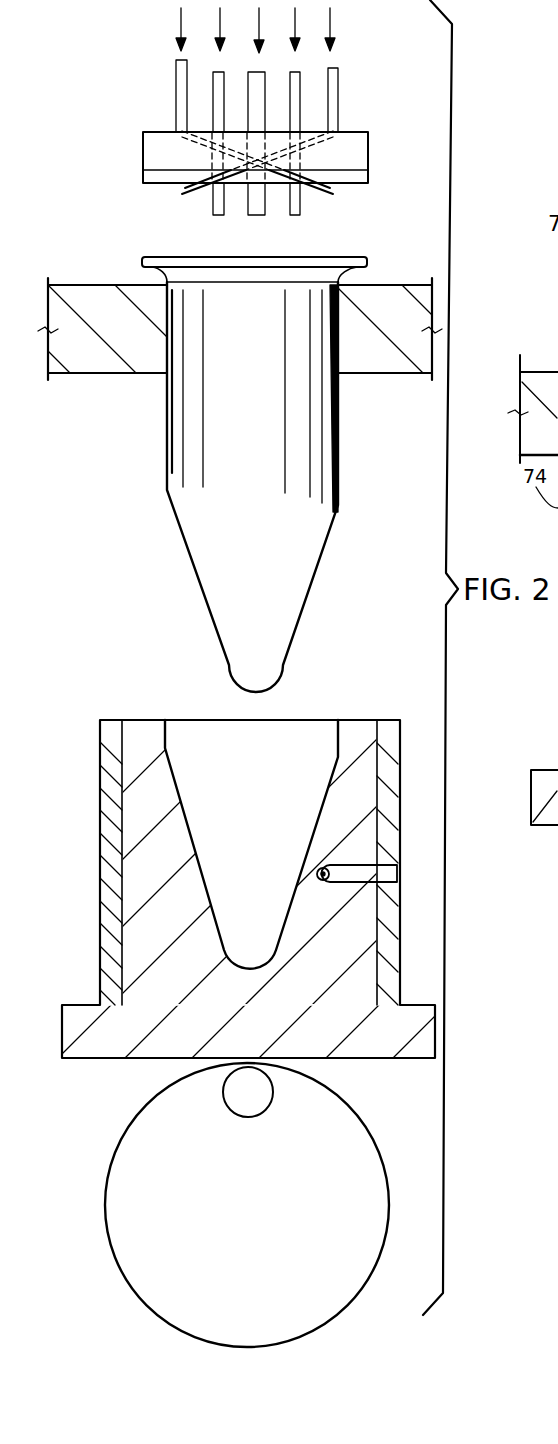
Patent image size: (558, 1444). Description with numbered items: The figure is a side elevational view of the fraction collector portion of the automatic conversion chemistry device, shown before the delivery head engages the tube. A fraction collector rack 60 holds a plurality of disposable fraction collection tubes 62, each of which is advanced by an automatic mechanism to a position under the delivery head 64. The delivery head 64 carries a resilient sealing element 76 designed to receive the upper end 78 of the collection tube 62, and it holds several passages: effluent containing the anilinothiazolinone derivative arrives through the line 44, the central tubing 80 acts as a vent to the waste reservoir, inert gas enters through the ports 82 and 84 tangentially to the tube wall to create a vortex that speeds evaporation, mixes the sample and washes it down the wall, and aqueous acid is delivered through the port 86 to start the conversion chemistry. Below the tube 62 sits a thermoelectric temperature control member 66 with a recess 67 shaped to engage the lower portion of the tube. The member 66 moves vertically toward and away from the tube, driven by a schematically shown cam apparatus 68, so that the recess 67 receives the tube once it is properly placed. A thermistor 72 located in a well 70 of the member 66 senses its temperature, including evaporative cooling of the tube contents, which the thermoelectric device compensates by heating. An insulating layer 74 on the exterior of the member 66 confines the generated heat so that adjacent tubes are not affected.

The inert gas port 82 is at (177, 60).
The line 44 is at (213, 72).
The central tubing 80 is at (252, 72).
The port 86 is at (299, 72).
The inert gas port 84 is at (338, 70).
The delivery head 64 is at (155, 132).
The sealing element 76 is at (143, 178).
The upper end 78 is at (350, 257).
The fraction collector rack 60 is at (107, 285).
The fraction collection tube 62 is at (167, 502).
The recess 67 is at (168, 742).
The insulating layer 74 is at (100, 732).
The thermoelectric temperature control member 66 is at (158, 862).
The thermistor 72 is at (329, 868).
The well 70 is at (393, 877).
The cam apparatus 68 is at (118, 1147).